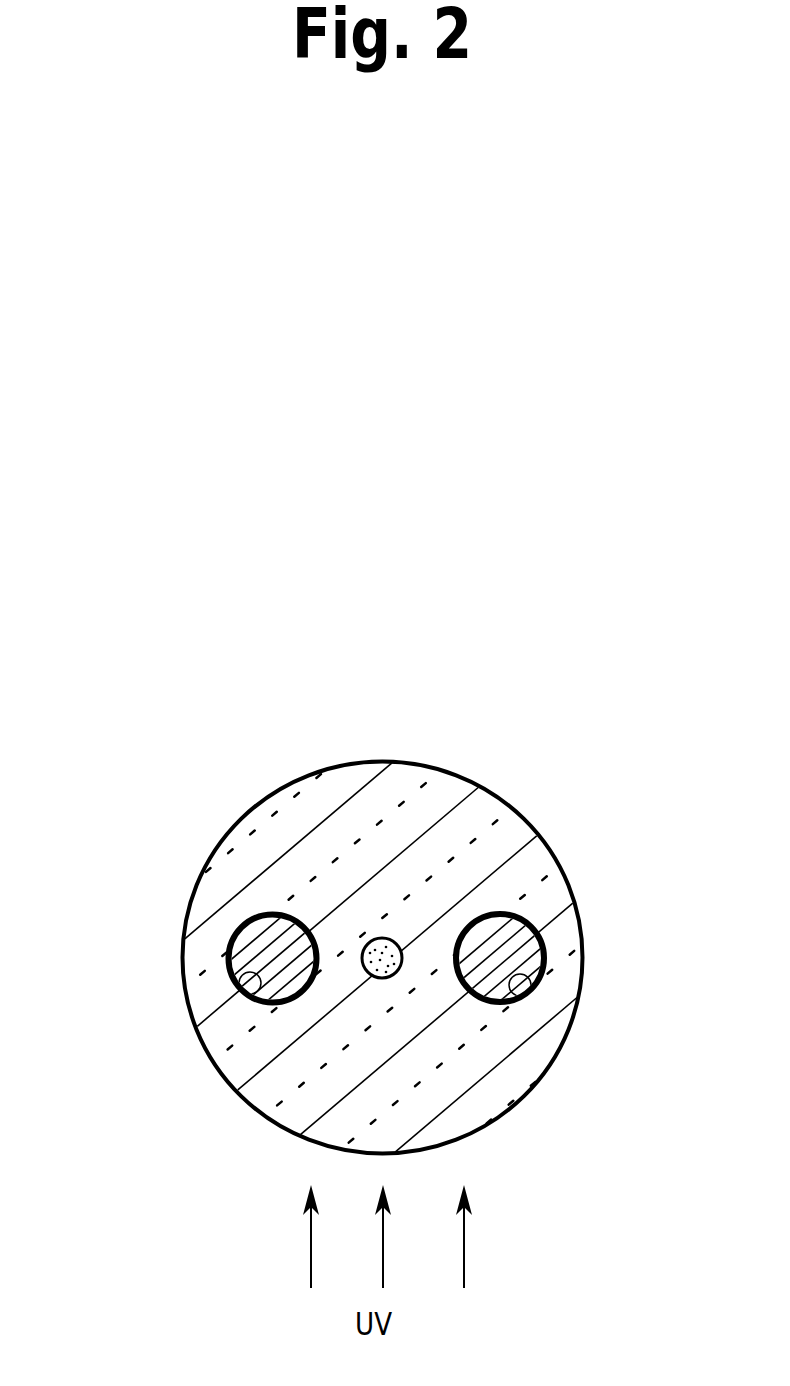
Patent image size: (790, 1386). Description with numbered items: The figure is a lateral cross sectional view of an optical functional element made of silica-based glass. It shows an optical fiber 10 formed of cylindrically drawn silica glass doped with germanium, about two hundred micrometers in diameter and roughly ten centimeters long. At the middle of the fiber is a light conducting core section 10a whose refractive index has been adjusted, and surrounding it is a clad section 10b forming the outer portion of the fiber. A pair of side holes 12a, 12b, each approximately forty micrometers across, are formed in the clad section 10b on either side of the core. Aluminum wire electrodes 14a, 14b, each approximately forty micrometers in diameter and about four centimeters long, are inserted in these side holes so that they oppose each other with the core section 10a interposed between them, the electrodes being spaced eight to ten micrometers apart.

The optical fiber 10 is at (554, 847).
The core section 10a is at (383, 935).
The clad section 10b is at (490, 1067).
The side hole 12a is at (250, 988).
The side hole 12b is at (507, 992).
The aluminum wire electrode 14a is at (186, 968).
The aluminum wire electrode 14b is at (605, 935).